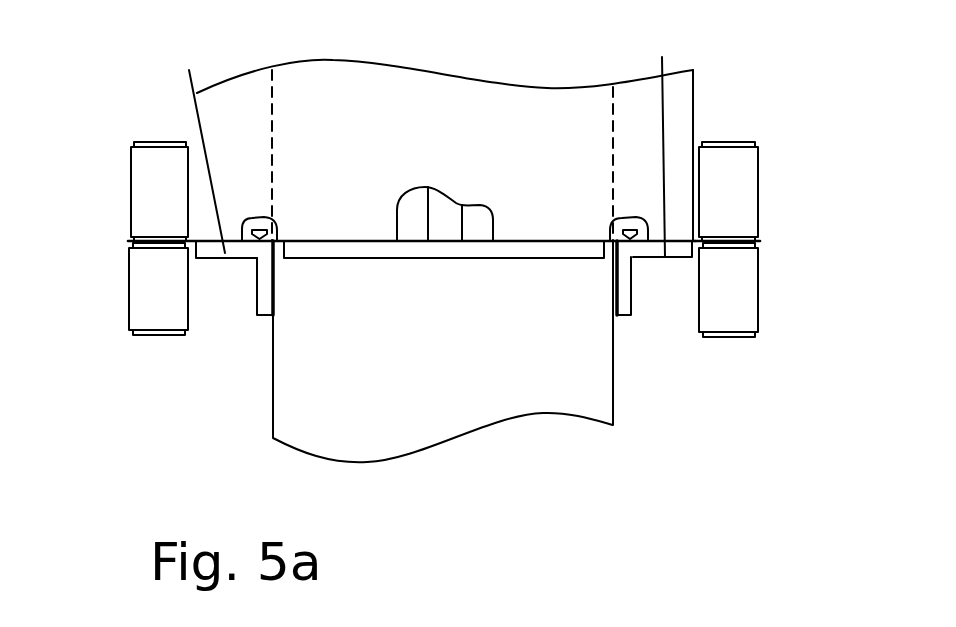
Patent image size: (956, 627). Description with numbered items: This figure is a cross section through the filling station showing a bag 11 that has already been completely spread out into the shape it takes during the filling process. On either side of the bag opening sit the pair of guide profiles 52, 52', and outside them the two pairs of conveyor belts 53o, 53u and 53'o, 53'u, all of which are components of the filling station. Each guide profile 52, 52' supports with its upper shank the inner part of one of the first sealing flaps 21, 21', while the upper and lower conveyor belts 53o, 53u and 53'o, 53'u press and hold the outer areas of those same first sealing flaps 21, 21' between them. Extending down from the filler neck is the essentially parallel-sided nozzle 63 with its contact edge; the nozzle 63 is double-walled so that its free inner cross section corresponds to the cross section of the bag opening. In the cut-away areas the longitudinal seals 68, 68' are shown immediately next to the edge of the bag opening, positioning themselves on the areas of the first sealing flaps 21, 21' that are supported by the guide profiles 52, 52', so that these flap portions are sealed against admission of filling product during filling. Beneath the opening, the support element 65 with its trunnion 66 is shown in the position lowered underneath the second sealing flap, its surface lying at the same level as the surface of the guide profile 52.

The bag 11 is at (425, 420).
The first sealing flap 21 is at (369, 214).
The first sealing flap 21' is at (767, 210).
The guide profile 52 is at (192, 140).
The guide profile 52' is at (655, 134).
The conveyor belt 53o is at (152, 183).
The conveyor belt 53u is at (157, 308).
The conveyor belt 53'o is at (778, 147).
The conveyor belt 53'u is at (765, 334).
The nozzle 63 is at (355, 113).
The support element 65 is at (525, 255).
The trunnion 66 is at (448, 228).
The longitudinal seal 68 is at (241, 289).
The longitudinal seal 68' is at (650, 297).